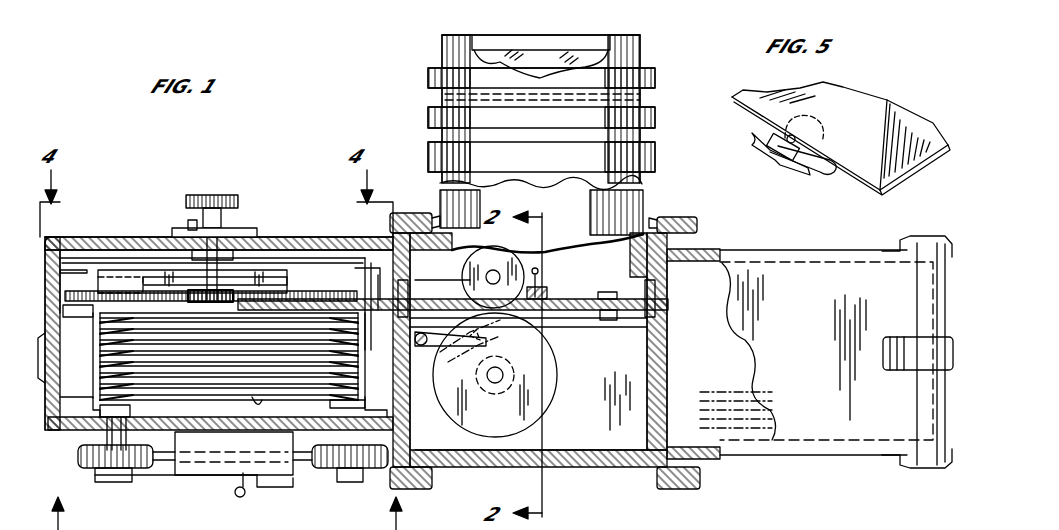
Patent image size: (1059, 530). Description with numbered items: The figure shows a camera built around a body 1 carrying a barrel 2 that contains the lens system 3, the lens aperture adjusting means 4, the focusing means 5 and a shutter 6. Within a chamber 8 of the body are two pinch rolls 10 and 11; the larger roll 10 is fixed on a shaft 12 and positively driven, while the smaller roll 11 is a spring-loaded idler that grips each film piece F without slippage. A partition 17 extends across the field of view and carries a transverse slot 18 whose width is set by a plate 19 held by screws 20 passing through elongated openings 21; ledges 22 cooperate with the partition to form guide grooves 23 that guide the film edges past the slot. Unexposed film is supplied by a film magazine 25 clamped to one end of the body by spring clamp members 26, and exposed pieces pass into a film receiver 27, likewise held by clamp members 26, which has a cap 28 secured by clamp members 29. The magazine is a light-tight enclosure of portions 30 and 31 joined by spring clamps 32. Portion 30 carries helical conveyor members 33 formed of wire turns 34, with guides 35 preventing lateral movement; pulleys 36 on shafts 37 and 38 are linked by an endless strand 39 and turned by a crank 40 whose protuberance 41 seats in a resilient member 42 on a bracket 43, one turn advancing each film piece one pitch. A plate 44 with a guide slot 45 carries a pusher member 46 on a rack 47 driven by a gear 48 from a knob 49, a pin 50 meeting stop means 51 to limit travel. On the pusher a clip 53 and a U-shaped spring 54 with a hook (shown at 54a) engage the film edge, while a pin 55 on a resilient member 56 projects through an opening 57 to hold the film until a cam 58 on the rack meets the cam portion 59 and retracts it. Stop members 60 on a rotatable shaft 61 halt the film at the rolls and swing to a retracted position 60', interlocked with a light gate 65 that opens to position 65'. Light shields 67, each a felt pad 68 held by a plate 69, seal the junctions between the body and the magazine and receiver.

In FIG. 1, the body 1 is at (572, 482).
In FIG. 1, the barrel 2 is at (422, 130).
In FIG. 1, the lens system 3 is at (545, 50).
In FIG. 1, the lens aperture adjusting means 4 is at (417, 117).
In FIG. 1, the focusing means 5 is at (656, 160).
In FIG. 1, the shutter 6 is at (656, 97).
In FIG. 1, the chamber 8 is at (604, 455).
In FIG. 1, the pinch roll 10 is at (540, 400).
In FIG. 1, the idler pinch roll 11 is at (515, 262).
In FIG. 1, the shaft 12 is at (506, 375).
In FIG. 1, the partition 17 is at (598, 307).
In FIG. 1, the transverse slot 18 is at (545, 309).
In FIG. 1, the plate 19 is at (574, 297).
In FIG. 1, the screws 20 is at (606, 292).
In FIG. 1, the elongated openings 21 is at (662, 343).
In FIG. 1, the ledges 22 is at (608, 320).
In FIG. 1, the guide grooves 23 is at (450, 298).
In FIG. 1, the film supply magazine 25 is at (306, 205).
In FIG. 1, the spring clamp members 26 is at (398, 213).
In FIG. 1, the film receiver 27 is at (840, 462).
In FIG. 1, the cap 28 is at (920, 408).
In FIG. 1, the clamp members 29 is at (942, 470).
In FIG. 1, the housing portion 30 is at (70, 430).
In FIG. 1, the housing portion 31 is at (62, 246).
In FIG. 1, the spring clamps 32 is at (42, 400).
In FIG. 1, the conveyor members 33 is at (98, 363).
In FIG. 1, the helical turns 34 is at (337, 396).
In FIG. 1, the guides 35 is at (96, 392).
In FIG. 1, the pulleys 36 is at (88, 470).
In FIG. 1, the shaft 37 is at (118, 430).
In FIG. 1, the shaft 38 is at (460, 442).
In FIG. 1, the endless strand 39 is at (165, 458).
In FIG. 1, the crank 40 is at (197, 480).
In FIG. 1, the protuberance 41 is at (250, 480).
In FIG. 1, the resilient member 42 is at (283, 488).
In FIG. 1, the bracket 43 is at (200, 445).
In FIG. 1, the plate 44 is at (313, 312).
In FIG. 1, the guide slot 45 is at (136, 280).
In FIG. 1, the pusher member 46 is at (82, 313).
In FIG. 5, the pusher member 46 is at (783, 167).
In FIG. 1, the rack 47 is at (88, 264).
In FIG. 1, the gear 48 is at (228, 292).
In FIG. 1, the knob 49 is at (205, 195).
In FIG. 1, the pin 50 is at (240, 228).
In FIG. 1, the stop means 51 is at (190, 222).
In FIG. 5, the clip 53 is at (823, 130).
In FIG. 5, the flat compressible spring 54 is at (816, 176).
In FIG. 5, the pin 54a is at (780, 136).
In FIG. 1, the pin 55 is at (353, 262).
In FIG. 1, the member 56 is at (106, 285).
In FIG. 1, the opening 57 is at (374, 290).
In FIG. 1, the cam 58 is at (84, 270).
In FIG. 1, the cam portion 59 is at (158, 272).
In FIG. 1, the stop members 60 is at (484, 341).
In FIG. 1, the retracted position of stop members 60' is at (509, 347).
In FIG. 1, the rotatable shaft 61 is at (440, 345).
In FIG. 1, the light gate 65 is at (558, 273).
In FIG. 1, the retracted position of light gate 65' is at (494, 289).
In FIG. 1, the light shield 67 is at (406, 290).
In FIG. 1, the felt pad 68 is at (672, 303).
In FIG. 1, the plate 69 is at (672, 280).
In FIG. 1, the film piece F is at (283, 292).
In FIG. 5, the film piece F is at (862, 180).